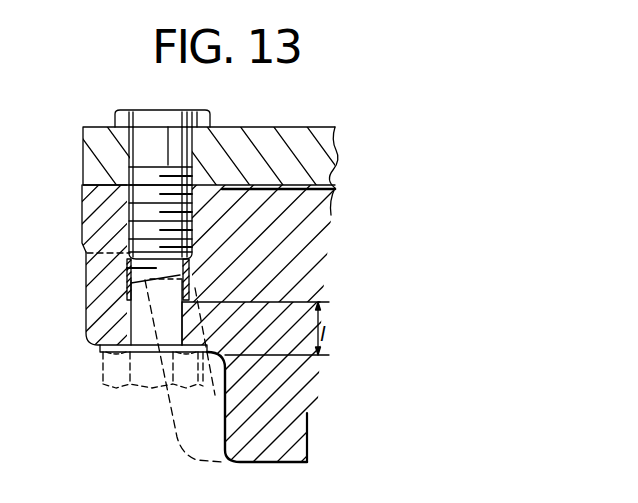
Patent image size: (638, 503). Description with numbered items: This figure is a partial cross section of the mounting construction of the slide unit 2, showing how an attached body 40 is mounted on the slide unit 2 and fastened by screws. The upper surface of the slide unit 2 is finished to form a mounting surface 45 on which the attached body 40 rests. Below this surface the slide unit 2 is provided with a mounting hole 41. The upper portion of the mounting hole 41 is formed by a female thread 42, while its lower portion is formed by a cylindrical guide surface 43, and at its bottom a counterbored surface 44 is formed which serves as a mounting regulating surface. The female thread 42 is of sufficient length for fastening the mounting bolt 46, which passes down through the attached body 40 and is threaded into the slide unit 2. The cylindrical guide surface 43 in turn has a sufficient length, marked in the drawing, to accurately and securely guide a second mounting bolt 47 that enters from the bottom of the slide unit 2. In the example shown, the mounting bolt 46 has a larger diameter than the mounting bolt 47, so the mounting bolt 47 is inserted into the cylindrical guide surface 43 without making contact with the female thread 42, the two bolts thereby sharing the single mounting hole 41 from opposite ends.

The attached body 40 is at (297, 143).
The slide unit 2 is at (103, 207).
The finished mounting surface 45 is at (113, 177).
The mounting bolt 46 is at (153, 140).
The female thread 42 is at (156, 268).
The mounting hole 41 is at (165, 273).
The cylindrical guide surface 43 is at (137, 323).
The counterbored surface 44 is at (110, 367).
The mounting bolt 47 is at (150, 373).